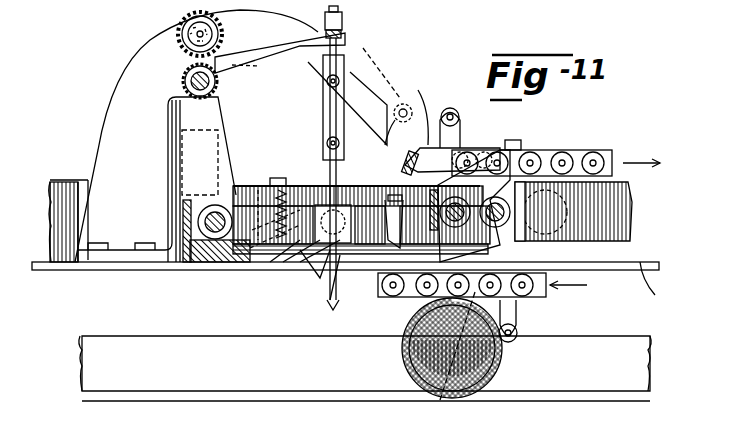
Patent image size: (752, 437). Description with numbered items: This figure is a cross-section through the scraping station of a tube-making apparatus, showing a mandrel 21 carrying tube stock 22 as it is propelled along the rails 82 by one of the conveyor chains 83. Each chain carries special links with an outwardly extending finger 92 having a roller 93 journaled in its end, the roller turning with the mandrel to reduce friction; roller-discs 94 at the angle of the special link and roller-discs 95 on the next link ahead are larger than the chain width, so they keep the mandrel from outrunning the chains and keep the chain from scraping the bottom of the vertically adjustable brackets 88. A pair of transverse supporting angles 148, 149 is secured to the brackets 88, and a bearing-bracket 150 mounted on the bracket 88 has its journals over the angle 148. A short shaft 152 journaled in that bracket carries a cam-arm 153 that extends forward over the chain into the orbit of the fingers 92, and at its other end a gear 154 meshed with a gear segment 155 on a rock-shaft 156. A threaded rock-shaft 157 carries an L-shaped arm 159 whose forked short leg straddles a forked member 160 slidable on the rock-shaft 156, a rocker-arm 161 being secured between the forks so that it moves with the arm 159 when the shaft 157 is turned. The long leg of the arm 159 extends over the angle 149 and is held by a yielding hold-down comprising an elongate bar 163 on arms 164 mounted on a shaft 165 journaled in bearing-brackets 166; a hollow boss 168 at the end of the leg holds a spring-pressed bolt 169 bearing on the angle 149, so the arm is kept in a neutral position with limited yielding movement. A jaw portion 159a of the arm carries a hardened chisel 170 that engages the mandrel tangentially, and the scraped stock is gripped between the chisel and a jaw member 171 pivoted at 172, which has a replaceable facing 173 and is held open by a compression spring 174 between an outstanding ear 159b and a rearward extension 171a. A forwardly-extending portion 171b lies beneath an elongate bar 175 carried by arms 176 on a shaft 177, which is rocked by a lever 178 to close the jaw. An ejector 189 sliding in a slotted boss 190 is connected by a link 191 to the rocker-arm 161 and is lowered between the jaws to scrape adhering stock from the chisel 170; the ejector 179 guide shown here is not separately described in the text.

The mandrel 21 is at (425, 385).
The tube stock 22 is at (470, 390).
The rails 82 is at (365, 368).
The conveyor chains 83 is at (609, 150).
The vertically adjustable brackets 88 is at (657, 284).
The finger 92 is at (462, 136).
The roller 93 is at (452, 110).
The roller-discs 94 is at (522, 305).
The roller-discs 95 is at (405, 330).
The supporting angle 148 is at (192, 270).
The supporting angle 149 is at (415, 270).
The bearing-bracket 150 is at (110, 136).
The short shaft 152 is at (180, 24).
The cam-arm 153 is at (343, 98).
The gear 154 is at (178, 42).
The gear segment 155 is at (185, 70).
The rock-shaft 156 is at (186, 81).
The rock-shaft 157 is at (205, 220).
The L-shaped arm 159 is at (276, 186).
The jaw portion 159a is at (296, 262).
The outstanding ear 159b is at (264, 186).
The forked member 160 is at (192, 117).
The rocker-arm 161 is at (262, 68).
The elongate bar 163 is at (458, 158).
The arms 164 is at (511, 146).
The shaft 165 is at (414, 358).
The bearing-brackets 166 is at (436, 392).
The hollow boss 168 is at (370, 200).
The spring-pressed bolt 169 is at (385, 270).
The chisel 170 is at (345, 283).
The jaw member 171 is at (312, 282).
The rearward extension 171a is at (252, 262).
The forwardly-extending portion 171b is at (357, 107).
The pivot 172 is at (326, 160).
The replaceable facing 173 is at (320, 300).
The compression spring 174 is at (268, 188).
The elongate bar 175 is at (405, 120).
The arms 176 is at (434, 104).
The shaft 177 is at (545, 212).
The lever 178 is at (570, 274).
The upper chain 179 is at (553, 150).
The ejector 189 is at (328, 140).
The slotted boss 190 is at (318, 266).
The link 191 is at (340, 98).